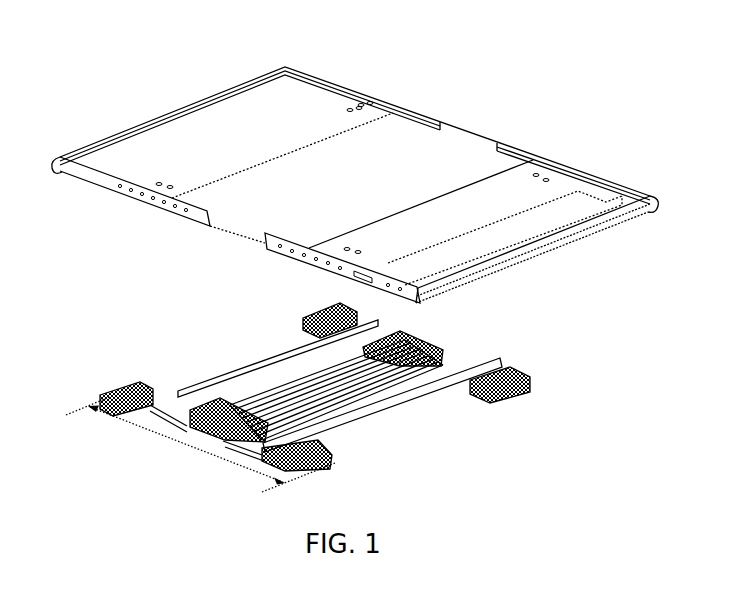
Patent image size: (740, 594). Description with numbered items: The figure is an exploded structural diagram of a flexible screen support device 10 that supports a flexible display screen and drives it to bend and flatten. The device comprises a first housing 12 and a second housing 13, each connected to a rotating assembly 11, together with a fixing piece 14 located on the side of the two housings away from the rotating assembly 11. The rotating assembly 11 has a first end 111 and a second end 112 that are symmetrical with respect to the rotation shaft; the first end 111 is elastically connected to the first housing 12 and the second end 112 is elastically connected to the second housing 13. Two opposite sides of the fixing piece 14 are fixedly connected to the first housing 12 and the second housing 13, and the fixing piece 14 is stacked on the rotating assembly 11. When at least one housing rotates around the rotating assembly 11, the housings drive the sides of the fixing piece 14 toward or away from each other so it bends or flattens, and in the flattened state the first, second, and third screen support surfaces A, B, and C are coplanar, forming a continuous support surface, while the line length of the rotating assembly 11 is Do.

The flexible screen support device 10 is at (78, 100).
The rotating assembly 11 is at (210, 400).
The first housing 12 is at (320, 93).
The second housing 13 is at (563, 178).
The fixing piece 14 is at (454, 145).
The first end 111 is at (278, 355).
The second end 112 is at (397, 406).